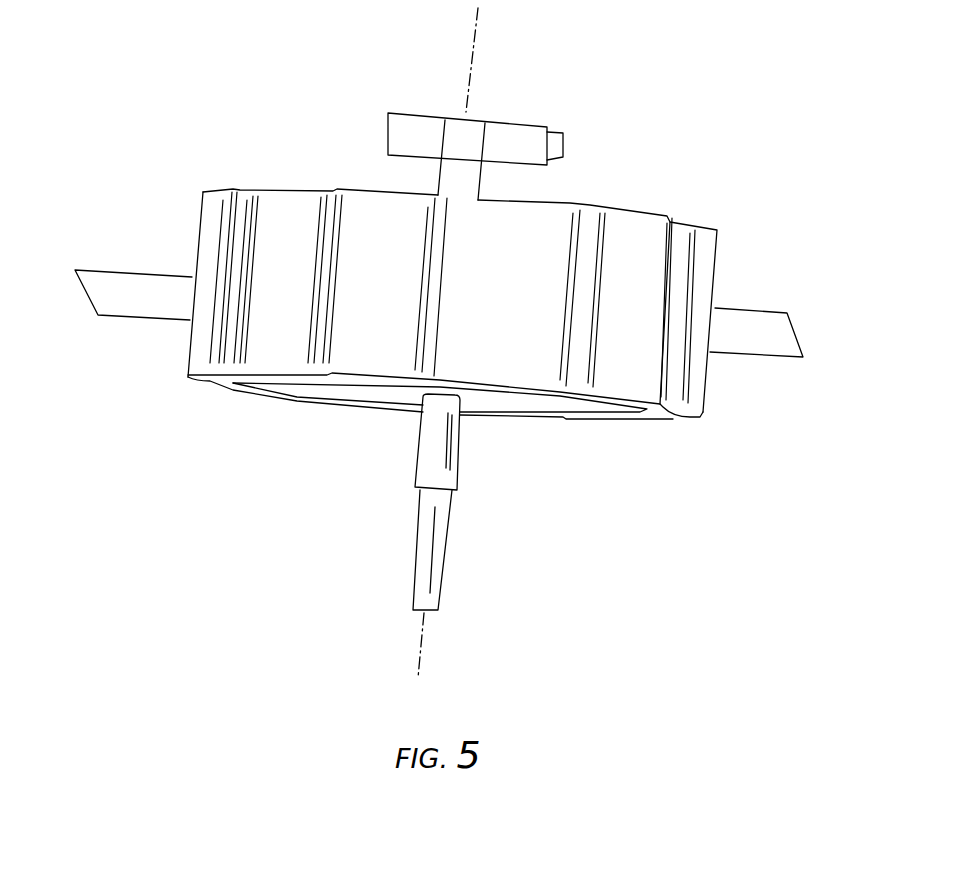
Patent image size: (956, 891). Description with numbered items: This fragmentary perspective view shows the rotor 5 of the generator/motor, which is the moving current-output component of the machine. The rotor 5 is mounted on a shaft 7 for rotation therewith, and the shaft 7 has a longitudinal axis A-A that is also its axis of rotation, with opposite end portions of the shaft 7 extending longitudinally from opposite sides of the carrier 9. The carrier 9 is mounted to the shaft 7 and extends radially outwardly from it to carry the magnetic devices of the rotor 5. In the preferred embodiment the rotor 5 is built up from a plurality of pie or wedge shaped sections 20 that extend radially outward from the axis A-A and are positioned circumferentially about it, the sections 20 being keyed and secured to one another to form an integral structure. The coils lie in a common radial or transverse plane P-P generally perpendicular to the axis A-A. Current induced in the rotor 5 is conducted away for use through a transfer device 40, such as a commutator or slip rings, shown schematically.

The rotor 5 is at (730, 328).
The shaft 7 is at (443, 547).
The carrier 9 is at (181, 333).
The pie shaped sections 20 is at (210, 245).
The transfer device 40 is at (540, 126).
The longitudinal axis A is at (473, 37).
The transverse plane P is at (126, 257).